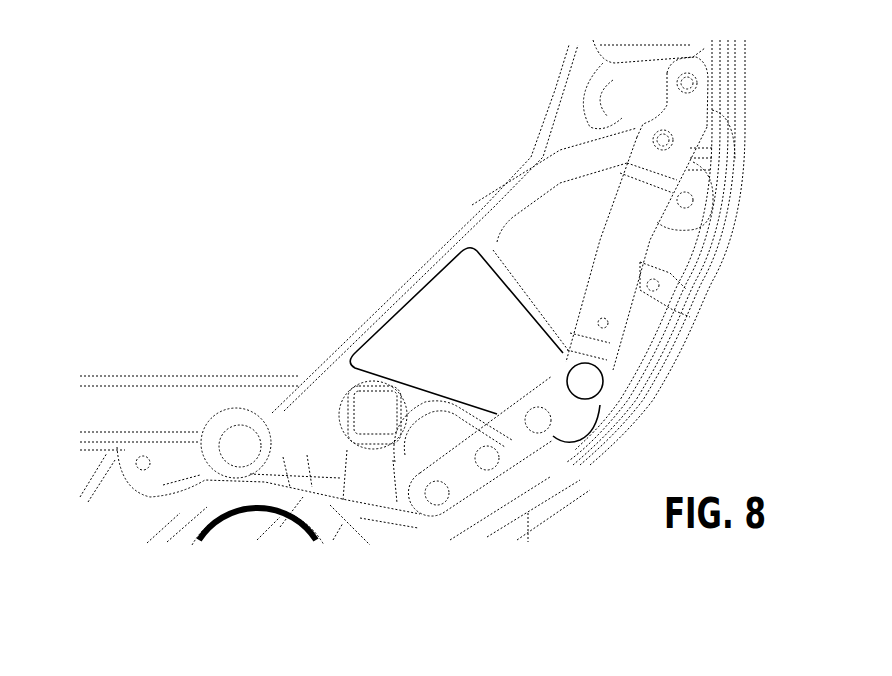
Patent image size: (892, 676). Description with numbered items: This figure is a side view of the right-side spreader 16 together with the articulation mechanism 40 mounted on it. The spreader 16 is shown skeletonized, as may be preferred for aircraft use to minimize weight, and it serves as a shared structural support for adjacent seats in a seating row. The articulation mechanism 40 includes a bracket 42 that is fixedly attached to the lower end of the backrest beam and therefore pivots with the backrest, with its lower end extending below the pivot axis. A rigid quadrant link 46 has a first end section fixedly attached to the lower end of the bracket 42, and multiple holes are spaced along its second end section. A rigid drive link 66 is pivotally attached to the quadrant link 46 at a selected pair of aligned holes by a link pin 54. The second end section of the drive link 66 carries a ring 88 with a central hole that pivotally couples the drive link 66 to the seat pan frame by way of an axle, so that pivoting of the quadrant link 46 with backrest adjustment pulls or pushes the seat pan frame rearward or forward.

The right-side spreader 16 is at (402, 292).
The quadrant link 46 is at (622, 255).
The bracket 42 is at (705, 140).
The articulation mechanism 40 is at (678, 255).
The link pin 54 is at (585, 377).
The ring 88 is at (233, 415).
The drive link 66 is at (382, 487).